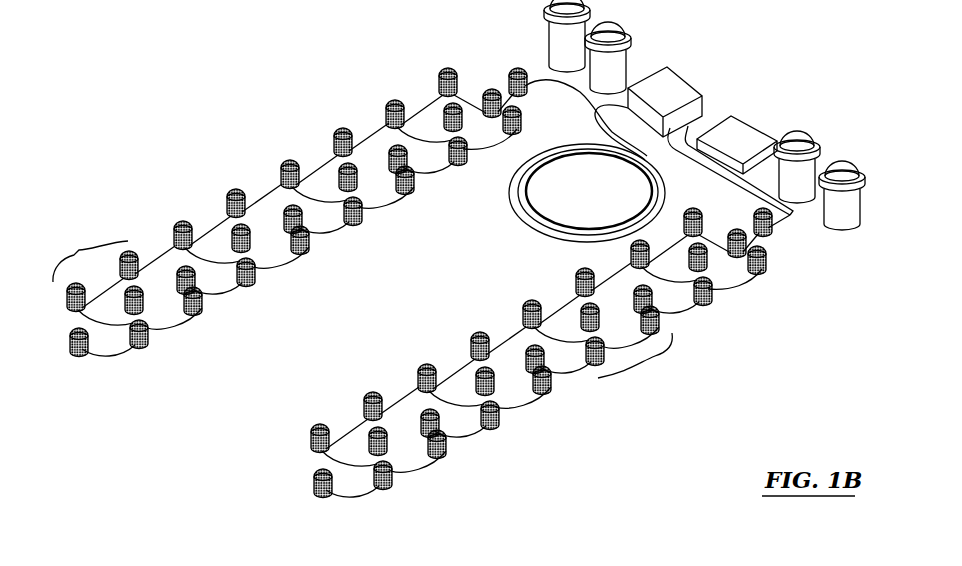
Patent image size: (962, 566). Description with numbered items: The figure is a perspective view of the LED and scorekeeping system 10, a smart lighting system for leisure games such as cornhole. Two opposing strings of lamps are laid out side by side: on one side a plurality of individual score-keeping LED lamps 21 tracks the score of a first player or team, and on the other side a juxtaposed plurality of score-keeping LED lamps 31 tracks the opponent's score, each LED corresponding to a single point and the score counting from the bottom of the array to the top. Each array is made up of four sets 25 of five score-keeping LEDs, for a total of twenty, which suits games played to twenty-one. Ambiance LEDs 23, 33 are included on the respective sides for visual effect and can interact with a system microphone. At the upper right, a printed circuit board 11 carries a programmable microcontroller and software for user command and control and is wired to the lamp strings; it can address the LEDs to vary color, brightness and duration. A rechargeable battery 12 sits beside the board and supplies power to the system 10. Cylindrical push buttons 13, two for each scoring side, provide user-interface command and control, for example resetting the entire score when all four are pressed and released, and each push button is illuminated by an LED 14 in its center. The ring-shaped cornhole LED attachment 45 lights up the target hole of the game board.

The scorekeeping system 10 is at (129, 188).
The printed circuit board 11 is at (677, 74).
The rechargeable battery 12 is at (742, 118).
The push button 13 is at (547, 38).
The push button LED 14 is at (826, 152).
The score-keeping LED lamp 21 is at (705, 300).
The ambiance LED 23 is at (438, 409).
The set of score-keeping LEDs 25 is at (552, 353).
The score-keeping LED lamp 31 is at (388, 110).
The ambiance LED 33 is at (345, 200).
The cornhole LED attachment 45 is at (602, 163).